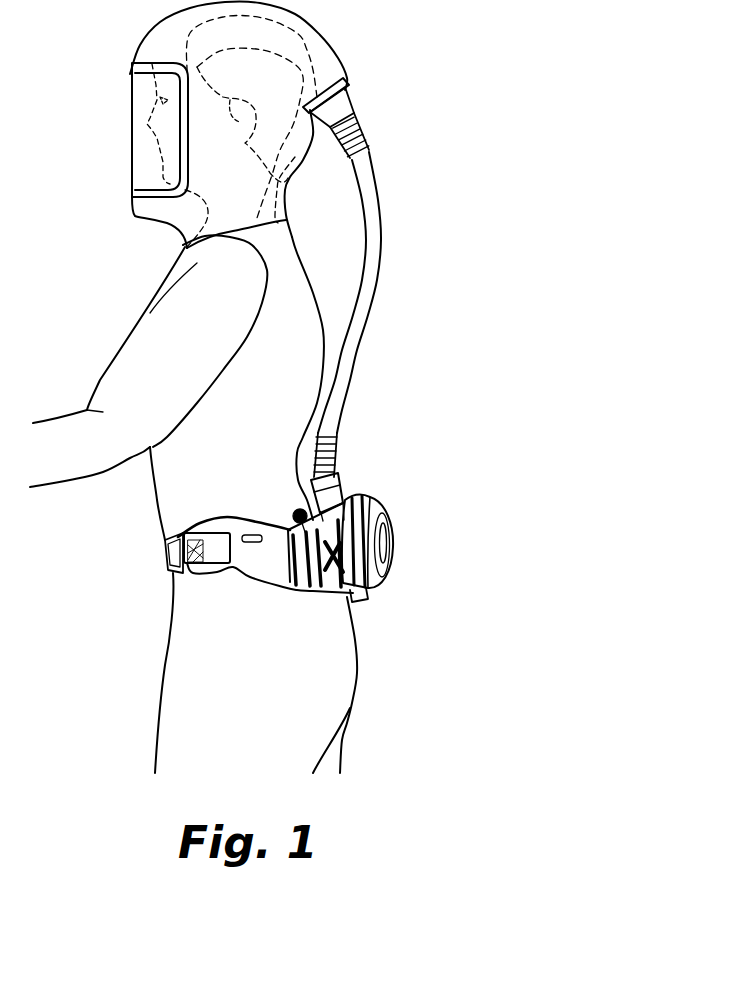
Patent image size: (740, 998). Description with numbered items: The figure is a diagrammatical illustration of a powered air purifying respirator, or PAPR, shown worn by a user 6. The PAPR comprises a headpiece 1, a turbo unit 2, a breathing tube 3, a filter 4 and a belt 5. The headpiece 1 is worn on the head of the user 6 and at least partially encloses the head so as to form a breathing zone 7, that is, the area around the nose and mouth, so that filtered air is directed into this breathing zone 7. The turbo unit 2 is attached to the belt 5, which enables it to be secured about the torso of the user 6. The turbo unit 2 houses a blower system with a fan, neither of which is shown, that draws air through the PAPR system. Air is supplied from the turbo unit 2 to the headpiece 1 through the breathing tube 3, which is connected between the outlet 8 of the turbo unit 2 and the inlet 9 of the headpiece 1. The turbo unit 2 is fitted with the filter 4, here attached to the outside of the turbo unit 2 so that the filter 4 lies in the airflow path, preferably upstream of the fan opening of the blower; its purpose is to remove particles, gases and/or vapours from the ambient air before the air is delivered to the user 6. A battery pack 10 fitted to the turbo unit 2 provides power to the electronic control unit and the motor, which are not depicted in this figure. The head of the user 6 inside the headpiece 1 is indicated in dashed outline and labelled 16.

The headpiece 1 is at (315, 45).
The turbo unit 2 is at (313, 597).
The breathing tube 3 is at (373, 238).
The filter 4 is at (380, 531).
The belt 5 is at (260, 563).
The user 6 is at (310, 374).
The breathing zone 7 is at (138, 157).
The outlet 8 is at (330, 491).
The inlet 9 is at (338, 103).
The battery pack 10 is at (357, 598).
The wearer's head 16 is at (295, 157).